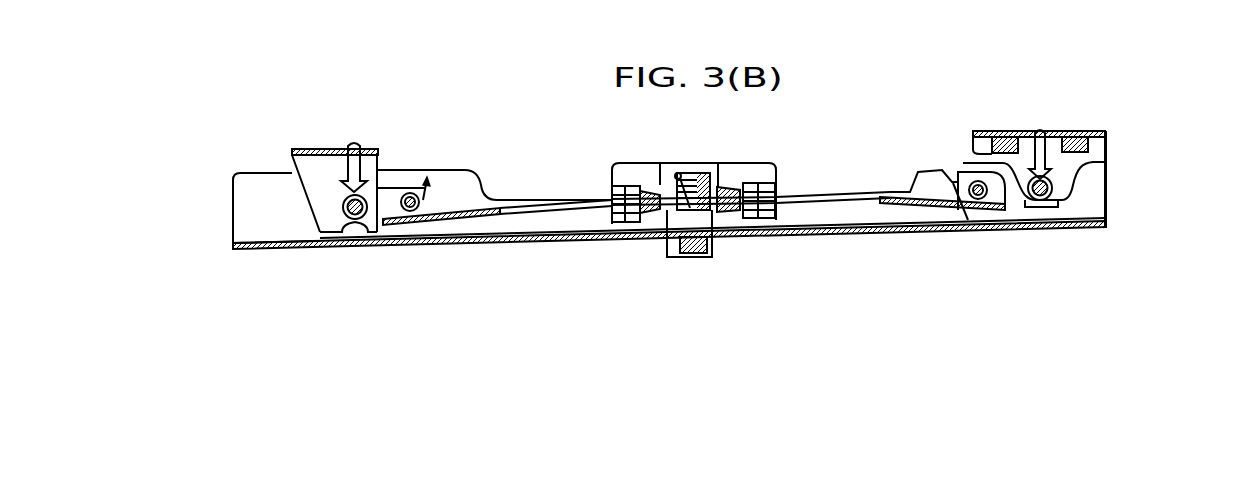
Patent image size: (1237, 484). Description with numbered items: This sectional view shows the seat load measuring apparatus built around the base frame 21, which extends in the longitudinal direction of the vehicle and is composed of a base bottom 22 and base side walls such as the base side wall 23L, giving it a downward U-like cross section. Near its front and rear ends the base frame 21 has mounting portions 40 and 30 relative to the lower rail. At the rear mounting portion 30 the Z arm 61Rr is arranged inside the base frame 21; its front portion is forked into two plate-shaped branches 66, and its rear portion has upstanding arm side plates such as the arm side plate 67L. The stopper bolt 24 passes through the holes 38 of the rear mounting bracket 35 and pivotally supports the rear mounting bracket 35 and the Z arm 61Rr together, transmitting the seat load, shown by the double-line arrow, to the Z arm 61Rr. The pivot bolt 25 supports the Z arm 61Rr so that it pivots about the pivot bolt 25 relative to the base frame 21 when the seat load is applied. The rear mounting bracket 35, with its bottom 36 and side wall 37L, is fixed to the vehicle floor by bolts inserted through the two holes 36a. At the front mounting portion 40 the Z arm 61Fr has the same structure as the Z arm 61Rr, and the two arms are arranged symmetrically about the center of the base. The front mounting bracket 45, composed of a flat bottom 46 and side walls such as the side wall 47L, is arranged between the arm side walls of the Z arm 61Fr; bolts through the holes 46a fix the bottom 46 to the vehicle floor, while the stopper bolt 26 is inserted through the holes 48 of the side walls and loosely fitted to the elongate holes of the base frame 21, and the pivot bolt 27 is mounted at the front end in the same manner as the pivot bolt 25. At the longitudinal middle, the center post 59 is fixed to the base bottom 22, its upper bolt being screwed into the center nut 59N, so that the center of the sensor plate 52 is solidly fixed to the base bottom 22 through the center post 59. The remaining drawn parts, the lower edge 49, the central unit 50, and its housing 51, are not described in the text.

The base frame 21 is at (733, 238).
The base bottom 22 is at (1107, 230).
The base side wall 23L is at (1101, 207).
The stopper bolt 24 is at (1025, 207).
The pivot bolt 25 is at (975, 200).
The stopper bolt 26 is at (369, 232).
The pivot bolt 27 is at (413, 212).
The mounting portion 30 is at (1010, 275).
The rear mounting bracket 35 is at (1096, 142).
The bottom 36 is at (1078, 131).
The holes 36a is at (1086, 130).
The side wall 37L is at (1107, 161).
The holes 38 is at (1054, 254).
The mounting portion 40 is at (464, 281).
The front mounting bracket 45 is at (256, 167).
The flat bottom 46 is at (277, 161).
The holes 46a is at (305, 150).
The side wall 47L is at (307, 200).
The holes 48 is at (343, 232).
The bottom edge of panel 49 is at (283, 237).
The tension adjusting unit 50 is at (702, 274).
The adjuster housing 51 is at (733, 218).
The sensor plate 52 is at (717, 210).
The center post 59 is at (683, 218).
The center nut 59N is at (692, 278).
The Z arm 61Fr is at (497, 188).
The Z arm 61Rr is at (897, 188).
The branches 66 is at (567, 198).
The arm side plate 67L is at (952, 168).